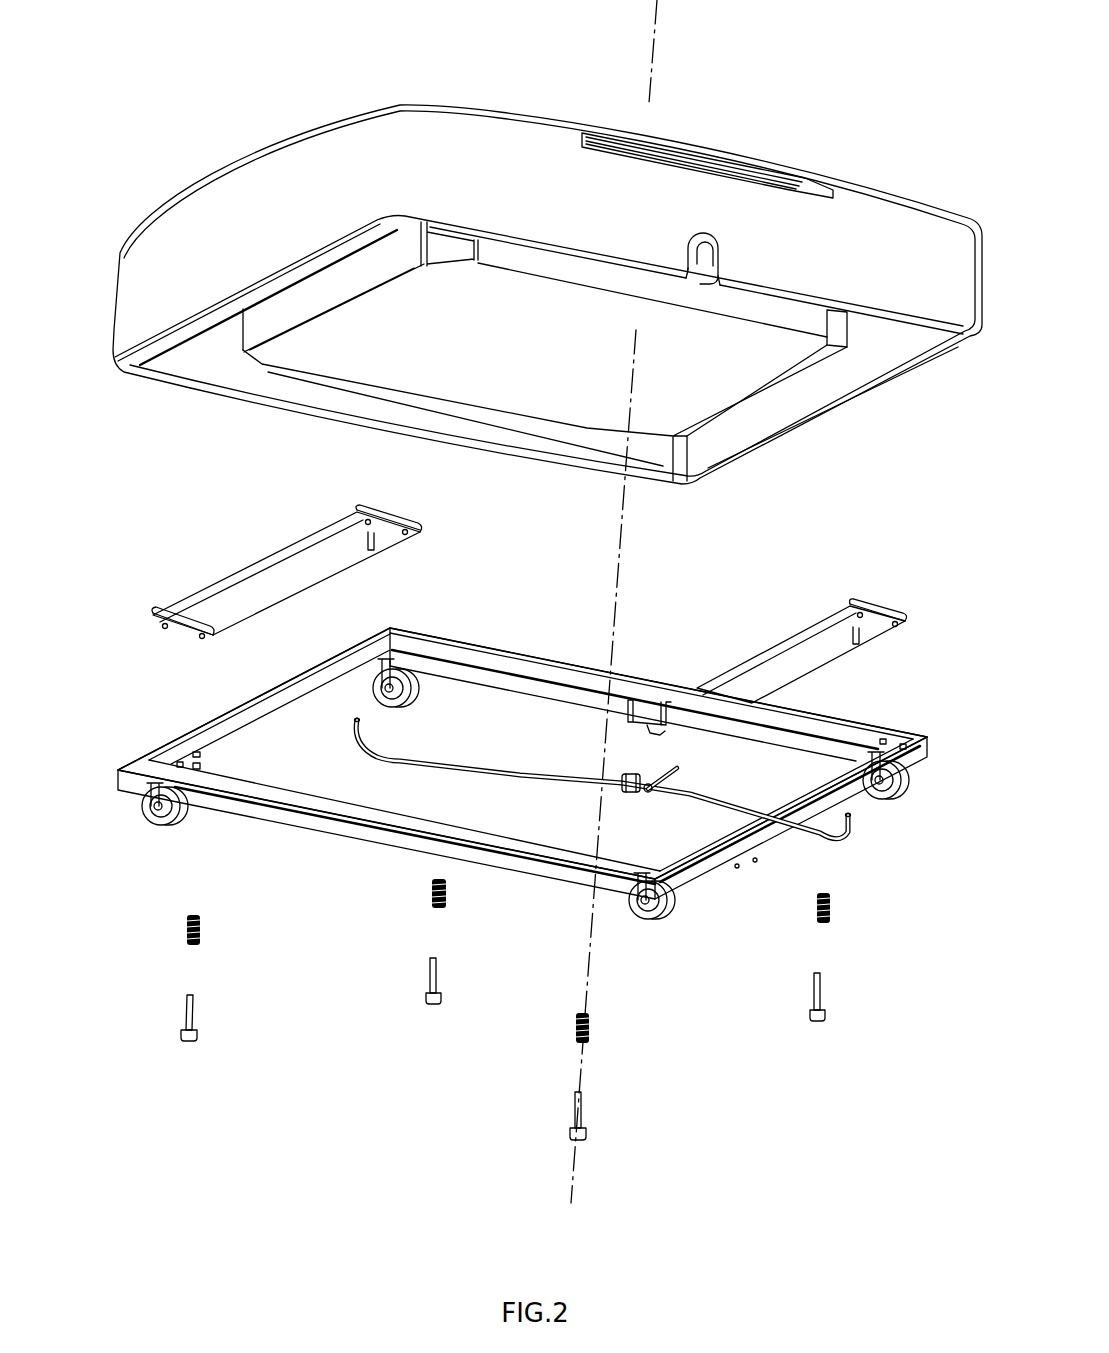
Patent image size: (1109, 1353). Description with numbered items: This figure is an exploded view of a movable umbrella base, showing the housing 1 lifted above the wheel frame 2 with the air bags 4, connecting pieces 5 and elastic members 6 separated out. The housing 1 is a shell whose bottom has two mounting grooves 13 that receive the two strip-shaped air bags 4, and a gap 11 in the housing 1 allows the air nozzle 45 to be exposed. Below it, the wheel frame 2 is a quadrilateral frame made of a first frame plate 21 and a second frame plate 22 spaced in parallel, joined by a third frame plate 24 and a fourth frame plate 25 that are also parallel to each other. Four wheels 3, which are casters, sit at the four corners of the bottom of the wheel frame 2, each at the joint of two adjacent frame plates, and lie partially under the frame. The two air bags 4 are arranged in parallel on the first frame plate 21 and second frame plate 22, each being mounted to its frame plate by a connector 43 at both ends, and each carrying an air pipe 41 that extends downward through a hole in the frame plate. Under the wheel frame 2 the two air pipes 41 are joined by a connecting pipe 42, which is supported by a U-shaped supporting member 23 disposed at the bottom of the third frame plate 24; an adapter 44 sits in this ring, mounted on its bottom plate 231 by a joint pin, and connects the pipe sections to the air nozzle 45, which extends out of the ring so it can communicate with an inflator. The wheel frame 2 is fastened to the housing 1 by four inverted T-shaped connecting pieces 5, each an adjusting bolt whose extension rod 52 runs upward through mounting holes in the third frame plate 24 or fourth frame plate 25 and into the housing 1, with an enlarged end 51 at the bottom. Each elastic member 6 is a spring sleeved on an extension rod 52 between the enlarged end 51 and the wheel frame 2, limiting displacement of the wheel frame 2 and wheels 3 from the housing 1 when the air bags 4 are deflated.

The housing 1 is at (438, 133).
The gap 11 is at (696, 265).
The mounting groove 13 is at (262, 300).
The wheel frame 2 is at (142, 750).
The first frame plate 21 is at (227, 710).
The second frame plate 22 is at (753, 840).
The supporting member 23 is at (633, 710).
The bottom plate 231 is at (650, 730).
The third frame plate 24 is at (673, 697).
The fourth frame plate 25 is at (337, 828).
The wheel 3 is at (150, 813).
The air bag 4 is at (270, 587).
The air pipe 41 is at (370, 550).
The connecting pipe 42 is at (537, 780).
The connector 43 is at (397, 532).
The adapter 44 is at (630, 797).
The air nozzle 45 is at (687, 787).
The connecting piece 5 is at (446, 1054).
The enlarged end 51 is at (183, 1034).
The extension rod 52 is at (193, 1020).
The elastic member 6 is at (187, 925).